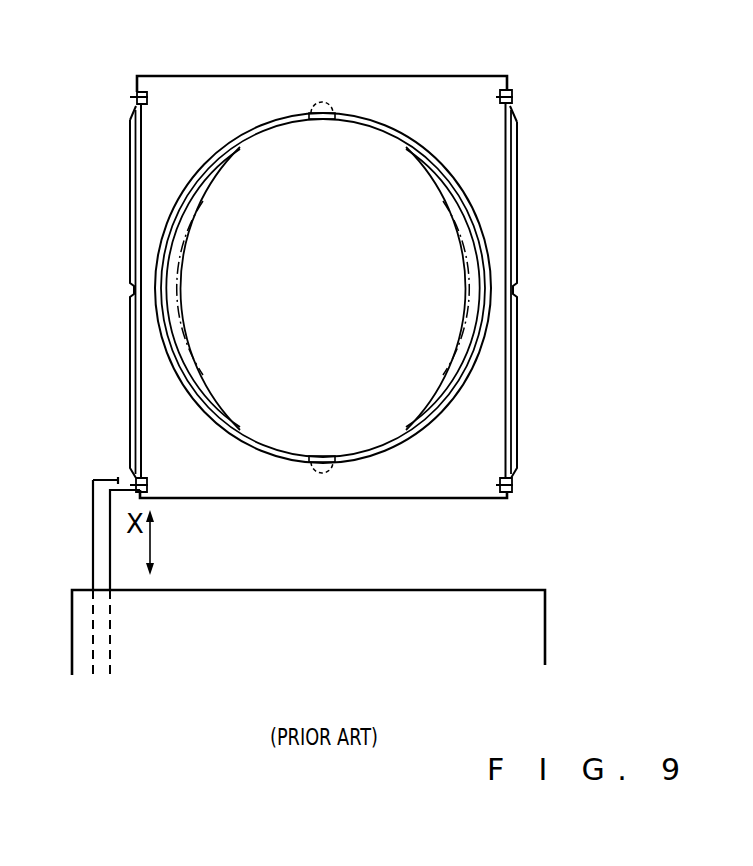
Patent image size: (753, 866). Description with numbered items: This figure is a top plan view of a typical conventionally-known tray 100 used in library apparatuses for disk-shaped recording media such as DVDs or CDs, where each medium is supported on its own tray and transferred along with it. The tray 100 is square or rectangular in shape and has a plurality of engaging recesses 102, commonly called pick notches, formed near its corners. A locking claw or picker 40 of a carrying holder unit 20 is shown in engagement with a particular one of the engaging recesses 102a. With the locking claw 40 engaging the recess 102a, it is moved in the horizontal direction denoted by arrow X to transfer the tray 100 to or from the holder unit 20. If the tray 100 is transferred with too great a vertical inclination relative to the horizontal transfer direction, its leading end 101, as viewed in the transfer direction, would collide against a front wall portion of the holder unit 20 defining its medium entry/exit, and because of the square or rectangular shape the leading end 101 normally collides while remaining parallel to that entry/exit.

The tray 100 is at (519, 143).
The leading end 101 is at (441, 76).
The engaging recess 102 is at (135, 98).
The engaging recess 102a is at (138, 477).
The locking claw 40 is at (93, 502).
The carrying holder unit 20 is at (550, 590).